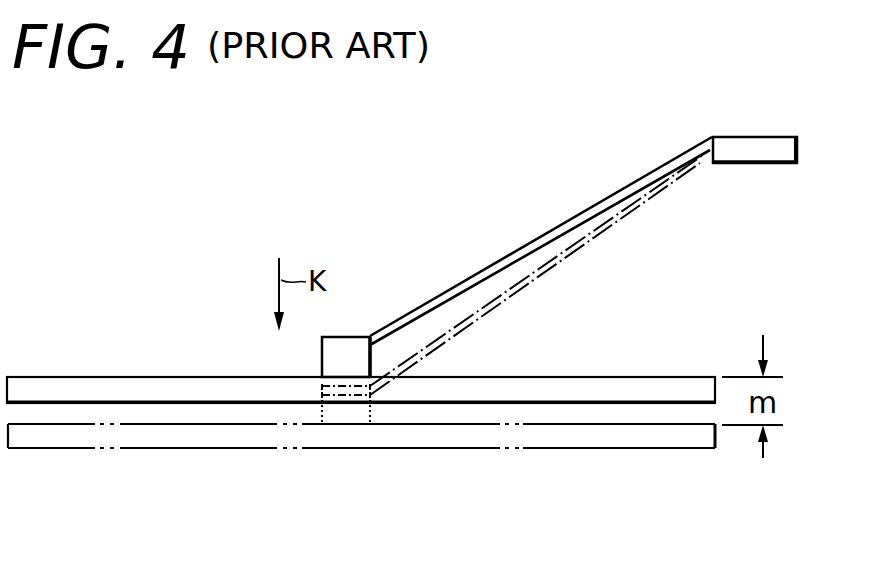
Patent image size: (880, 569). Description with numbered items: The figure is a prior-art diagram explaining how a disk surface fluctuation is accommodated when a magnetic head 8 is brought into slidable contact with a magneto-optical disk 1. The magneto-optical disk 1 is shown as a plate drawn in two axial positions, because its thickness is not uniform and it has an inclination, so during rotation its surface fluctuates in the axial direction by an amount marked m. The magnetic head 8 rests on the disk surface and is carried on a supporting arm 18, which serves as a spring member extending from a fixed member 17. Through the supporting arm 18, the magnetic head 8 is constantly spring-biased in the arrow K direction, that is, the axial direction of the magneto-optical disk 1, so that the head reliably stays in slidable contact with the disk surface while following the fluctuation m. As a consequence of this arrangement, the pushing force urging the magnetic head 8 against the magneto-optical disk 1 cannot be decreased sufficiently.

The magneto-optical disk 1 is at (617, 386).
The magnetic head 8 is at (322, 357).
The fixed member 17 is at (754, 147).
The supporting arm 18 is at (546, 231).